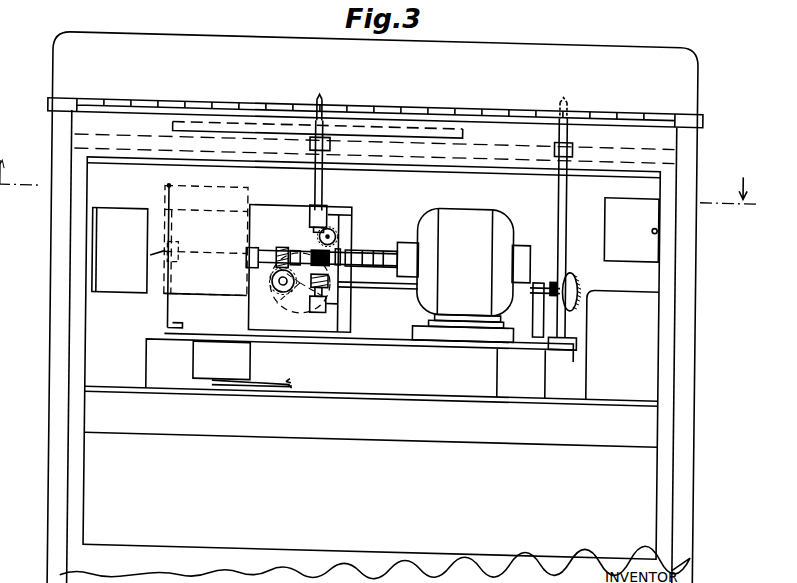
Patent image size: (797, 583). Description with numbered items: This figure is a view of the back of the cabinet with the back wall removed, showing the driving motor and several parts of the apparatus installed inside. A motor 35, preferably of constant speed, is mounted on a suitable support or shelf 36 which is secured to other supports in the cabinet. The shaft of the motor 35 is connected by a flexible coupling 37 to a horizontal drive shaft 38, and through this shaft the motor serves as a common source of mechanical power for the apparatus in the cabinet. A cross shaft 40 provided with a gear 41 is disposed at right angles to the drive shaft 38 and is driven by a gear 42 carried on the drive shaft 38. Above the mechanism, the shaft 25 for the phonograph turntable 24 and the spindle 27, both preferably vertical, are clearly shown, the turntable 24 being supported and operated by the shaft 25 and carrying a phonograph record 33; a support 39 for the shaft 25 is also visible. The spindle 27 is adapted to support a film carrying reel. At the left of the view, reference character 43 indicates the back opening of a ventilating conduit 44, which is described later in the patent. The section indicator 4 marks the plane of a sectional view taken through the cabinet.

The section line 4- 4 is at (378, 174).
The phonograph turntable 24 is at (466, 121).
The shaft 25 is at (324, 180).
The spindle 27 is at (559, 181).
The phonograph record 33 is at (436, 110).
The motor 35 is at (466, 183).
The support or shelf 36 is at (379, 334).
The flexible coupling 37 is at (371, 242).
The horizontal drive shaft 38 is at (319, 241).
The support 39 is at (355, 206).
The cross shaft 40 is at (280, 271).
The gear 41 is at (281, 284).
The gear 42 is at (284, 240).
The back opening of ventilating conduit 43 is at (121, 289).
The ventilating conduit 44 is at (152, 200).